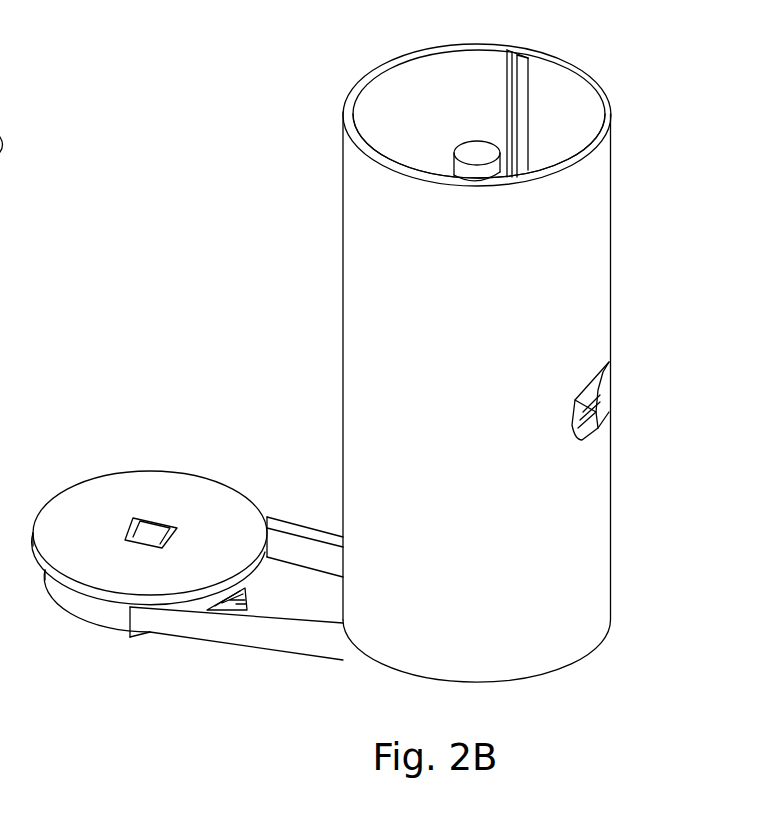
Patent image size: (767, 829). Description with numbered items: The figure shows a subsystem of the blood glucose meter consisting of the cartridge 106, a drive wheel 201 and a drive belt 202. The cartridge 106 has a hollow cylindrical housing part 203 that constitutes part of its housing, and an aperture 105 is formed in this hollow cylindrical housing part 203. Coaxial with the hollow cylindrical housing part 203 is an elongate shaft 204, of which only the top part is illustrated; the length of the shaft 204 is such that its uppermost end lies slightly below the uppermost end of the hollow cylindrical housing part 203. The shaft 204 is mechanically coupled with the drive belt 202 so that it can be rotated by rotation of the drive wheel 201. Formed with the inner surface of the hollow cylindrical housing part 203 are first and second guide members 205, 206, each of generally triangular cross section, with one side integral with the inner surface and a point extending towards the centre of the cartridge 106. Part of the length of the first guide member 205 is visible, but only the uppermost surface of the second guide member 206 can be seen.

The aperture 105 is at (607, 405).
The cartridge 106 is at (655, 133).
The drive wheel 201 is at (130, 492).
The drive belt 202 is at (230, 628).
The hollow cylindrical housing part 203 is at (560, 560).
The elongate shaft 204 is at (470, 155).
The first guide member 205 is at (515, 103).
The second guide member 206 is at (505, 174).